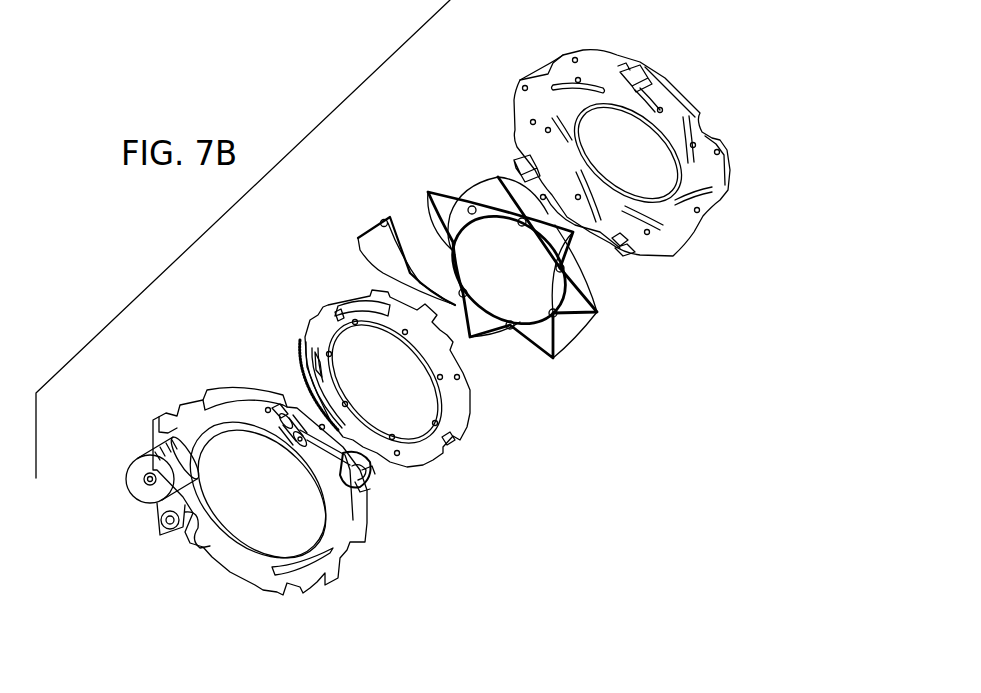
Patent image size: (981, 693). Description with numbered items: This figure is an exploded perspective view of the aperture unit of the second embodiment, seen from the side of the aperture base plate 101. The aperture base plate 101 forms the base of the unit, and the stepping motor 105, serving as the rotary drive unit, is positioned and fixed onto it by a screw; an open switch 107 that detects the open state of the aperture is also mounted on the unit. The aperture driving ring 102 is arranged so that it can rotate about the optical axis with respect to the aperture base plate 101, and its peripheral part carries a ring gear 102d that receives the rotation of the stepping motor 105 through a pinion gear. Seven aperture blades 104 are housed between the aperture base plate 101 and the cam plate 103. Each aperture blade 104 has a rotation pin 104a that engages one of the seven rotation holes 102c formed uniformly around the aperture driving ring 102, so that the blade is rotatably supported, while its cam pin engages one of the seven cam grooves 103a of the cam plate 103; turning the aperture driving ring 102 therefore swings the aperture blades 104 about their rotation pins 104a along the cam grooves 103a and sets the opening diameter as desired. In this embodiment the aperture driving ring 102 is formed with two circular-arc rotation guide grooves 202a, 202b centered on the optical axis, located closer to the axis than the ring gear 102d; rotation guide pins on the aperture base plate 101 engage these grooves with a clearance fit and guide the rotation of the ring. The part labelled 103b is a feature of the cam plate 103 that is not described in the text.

The aperture base plate 101 is at (370, 520).
The aperture driving ring 102 is at (361, 374).
The rotation holes 102c is at (308, 343).
The ring gear 102d is at (327, 354).
The cam plate 103 is at (688, 245).
The cam grooves 103a is at (516, 143).
The engagement portion 103b is at (645, 72).
The aperture blades 104 is at (354, 231).
The rotation pin 104a is at (381, 220).
The stepping motor 105 is at (128, 478).
The open switch 107 is at (288, 437).
The rotation guide groove 202a is at (320, 377).
The rotation guide groove 202b is at (338, 317).